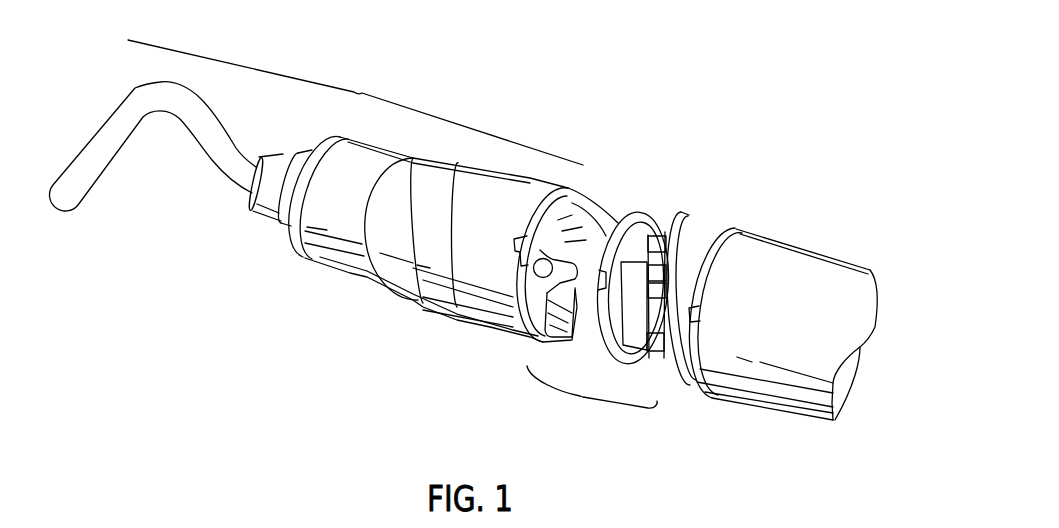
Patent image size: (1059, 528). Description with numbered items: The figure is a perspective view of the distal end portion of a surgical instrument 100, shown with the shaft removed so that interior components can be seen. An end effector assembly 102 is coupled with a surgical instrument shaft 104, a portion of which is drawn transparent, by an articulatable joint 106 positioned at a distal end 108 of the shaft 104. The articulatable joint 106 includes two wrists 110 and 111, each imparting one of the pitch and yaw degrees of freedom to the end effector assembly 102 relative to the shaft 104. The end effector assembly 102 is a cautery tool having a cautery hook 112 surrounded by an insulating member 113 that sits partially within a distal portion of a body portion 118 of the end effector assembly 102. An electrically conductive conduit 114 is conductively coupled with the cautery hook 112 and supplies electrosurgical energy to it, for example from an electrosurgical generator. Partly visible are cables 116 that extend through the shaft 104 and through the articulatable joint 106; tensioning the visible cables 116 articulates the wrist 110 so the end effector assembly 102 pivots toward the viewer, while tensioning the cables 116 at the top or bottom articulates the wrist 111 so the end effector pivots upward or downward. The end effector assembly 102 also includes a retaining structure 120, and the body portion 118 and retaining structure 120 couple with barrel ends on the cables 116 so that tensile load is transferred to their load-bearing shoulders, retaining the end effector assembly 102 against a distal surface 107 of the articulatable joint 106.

The surgical instrument 100 is at (705, 50).
The end effector assembly 102 is at (358, 92).
The surgical instrument shaft 104 is at (803, 262).
The articulatable joint 106 is at (583, 397).
The distal surface 107 is at (510, 330).
The distal end 108 is at (740, 231).
The wrist 110 is at (669, 225).
The wrist 111 is at (612, 190).
The cautery hook 112 is at (74, 195).
The insulating member 113 is at (270, 216).
The electrically conductive conduit 114 is at (660, 237).
The cables 116 is at (686, 232).
The body portion 118 is at (348, 277).
The retaining structure 120 is at (473, 277).